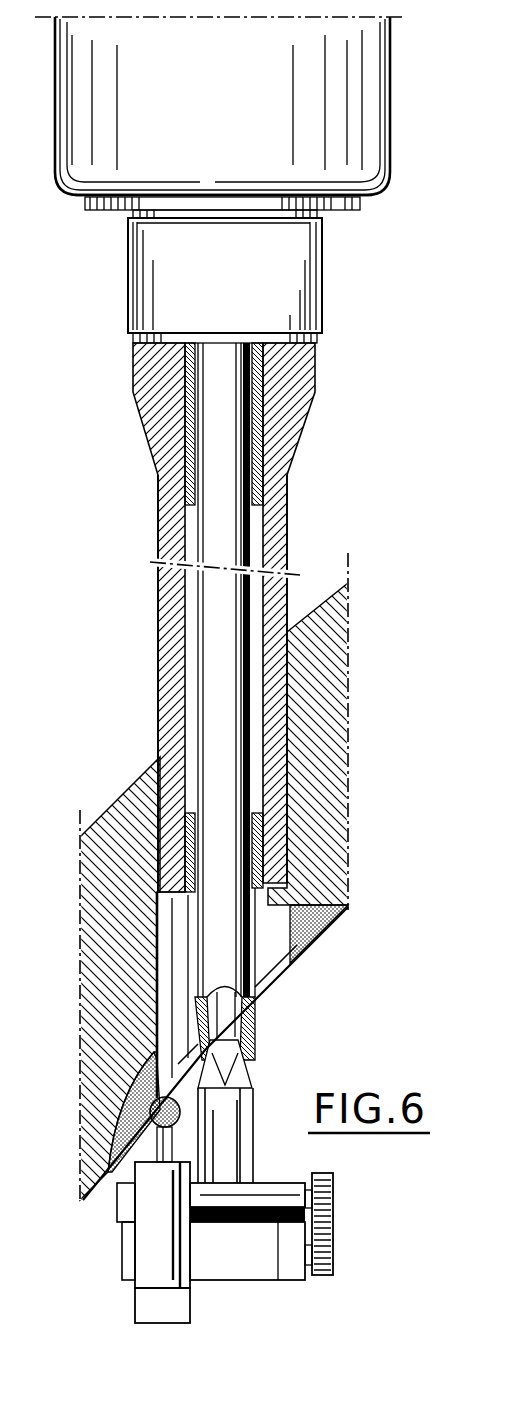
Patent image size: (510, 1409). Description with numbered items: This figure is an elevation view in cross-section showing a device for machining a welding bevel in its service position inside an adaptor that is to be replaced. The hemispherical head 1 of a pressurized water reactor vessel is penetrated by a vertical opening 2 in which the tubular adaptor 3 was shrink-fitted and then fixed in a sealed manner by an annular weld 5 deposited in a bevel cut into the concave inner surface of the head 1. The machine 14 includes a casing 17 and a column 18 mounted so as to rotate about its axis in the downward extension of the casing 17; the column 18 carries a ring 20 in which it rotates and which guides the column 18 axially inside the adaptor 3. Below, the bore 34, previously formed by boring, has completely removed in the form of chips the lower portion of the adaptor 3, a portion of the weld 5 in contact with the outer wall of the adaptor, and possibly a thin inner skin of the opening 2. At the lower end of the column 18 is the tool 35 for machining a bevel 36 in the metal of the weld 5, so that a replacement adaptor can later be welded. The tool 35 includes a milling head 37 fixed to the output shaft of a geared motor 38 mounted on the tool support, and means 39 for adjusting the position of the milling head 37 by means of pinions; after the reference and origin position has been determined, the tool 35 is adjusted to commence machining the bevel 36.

The head 1 is at (320, 655).
The opening 2 is at (288, 768).
The adaptor 3 is at (150, 377).
The annular weld 5 is at (317, 937).
The machine 14 is at (386, 202).
The casing 17 is at (55, 137).
The column 18 is at (228, 422).
The ring 20 is at (263, 840).
The bore 34 is at (170, 960).
The tool 35 is at (350, 1207).
The bevel 36 is at (267, 977).
The milling head 37 is at (118, 1112).
The geared motor 38 is at (158, 1232).
The means for adjusting 39 is at (333, 1232).